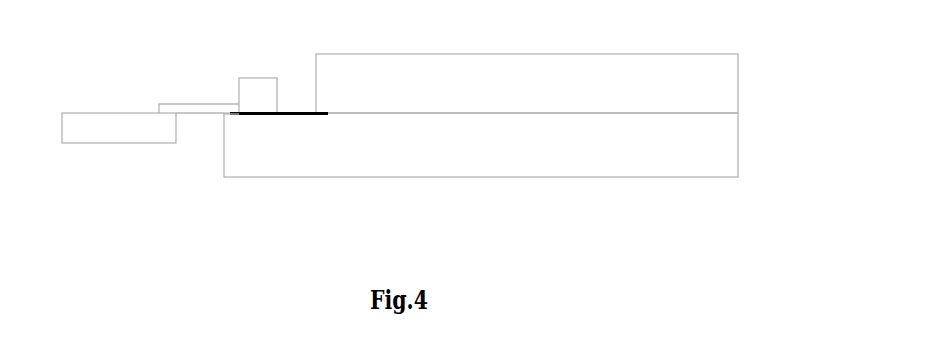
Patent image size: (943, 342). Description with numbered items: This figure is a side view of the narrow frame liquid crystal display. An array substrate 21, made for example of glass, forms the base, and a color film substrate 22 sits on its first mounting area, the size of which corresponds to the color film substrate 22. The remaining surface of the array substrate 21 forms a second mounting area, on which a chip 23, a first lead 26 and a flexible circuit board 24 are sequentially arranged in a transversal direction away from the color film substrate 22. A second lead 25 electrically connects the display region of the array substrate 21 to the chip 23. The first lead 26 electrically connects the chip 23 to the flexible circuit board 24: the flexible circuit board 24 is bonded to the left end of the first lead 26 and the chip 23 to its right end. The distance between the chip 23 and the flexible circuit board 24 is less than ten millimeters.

The array substrate 21 is at (355, 157).
The color film substrate 22 is at (586, 72).
The chip 23 is at (258, 88).
The flexible circuit board 24 is at (182, 109).
The second lead 25 is at (293, 113).
The first lead 26 is at (242, 115).